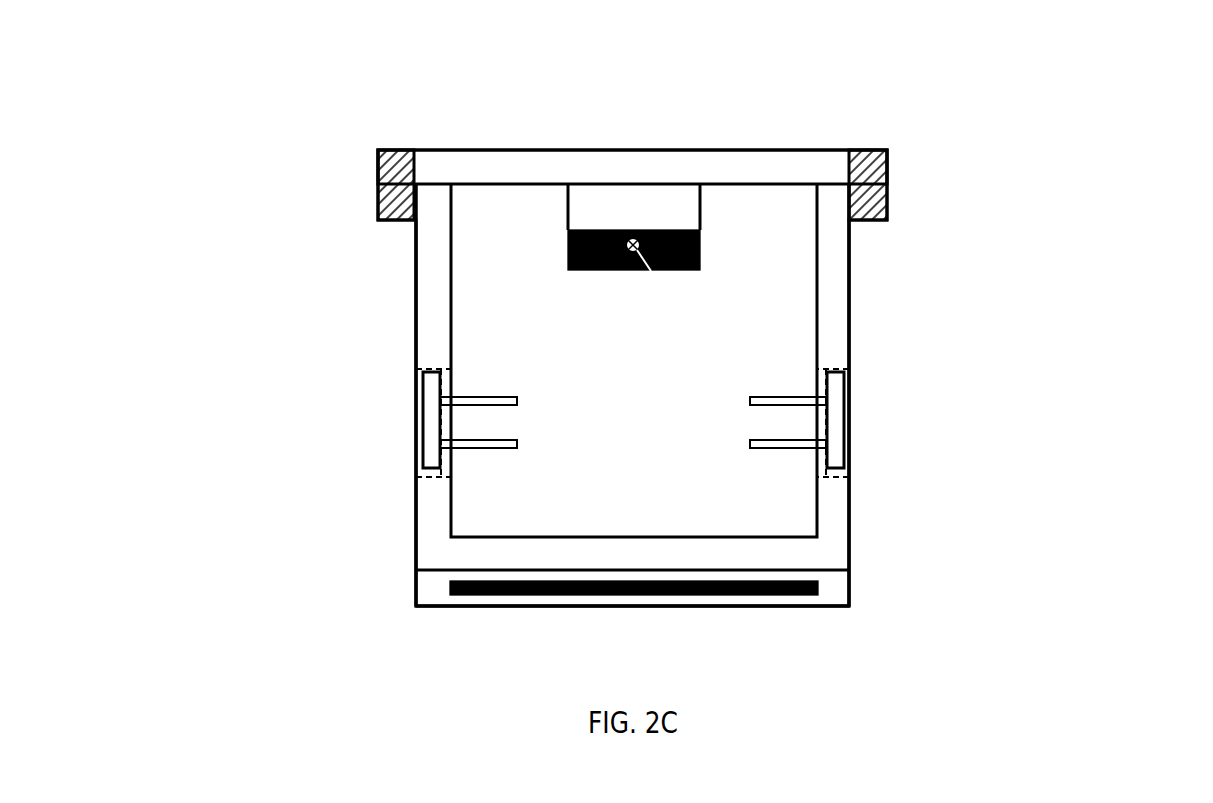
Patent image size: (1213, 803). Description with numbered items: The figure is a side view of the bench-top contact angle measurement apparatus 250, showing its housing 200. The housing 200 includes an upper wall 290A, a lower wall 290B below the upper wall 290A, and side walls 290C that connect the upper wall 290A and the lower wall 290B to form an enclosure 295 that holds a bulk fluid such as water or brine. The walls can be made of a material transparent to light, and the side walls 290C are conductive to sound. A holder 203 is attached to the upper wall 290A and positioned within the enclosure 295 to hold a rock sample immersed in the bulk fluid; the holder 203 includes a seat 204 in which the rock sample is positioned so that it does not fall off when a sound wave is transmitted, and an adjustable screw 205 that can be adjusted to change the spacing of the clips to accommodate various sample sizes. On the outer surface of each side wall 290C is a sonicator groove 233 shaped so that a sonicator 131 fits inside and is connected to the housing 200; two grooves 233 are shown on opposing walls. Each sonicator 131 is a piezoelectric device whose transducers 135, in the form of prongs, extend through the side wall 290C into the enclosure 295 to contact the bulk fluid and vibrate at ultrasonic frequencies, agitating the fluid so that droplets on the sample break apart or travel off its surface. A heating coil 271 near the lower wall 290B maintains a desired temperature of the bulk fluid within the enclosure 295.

The housing 200 is at (856, 526).
The upper wall 290A is at (635, 150).
The lower wall 290B is at (473, 606).
The side wall 290C is at (416, 527).
The enclosure 295 is at (765, 213).
The seat 204 is at (598, 200).
The holder 203 is at (700, 245).
The adjustable screw 205 is at (650, 270).
The transducer 135 is at (782, 397).
The sonicator 131 is at (1068, 402).
The sonicator groove 233 is at (915, 422).
The heating coil 271 is at (450, 586).
The bench-top contact angle measurement apparatus 250 is at (867, 675).